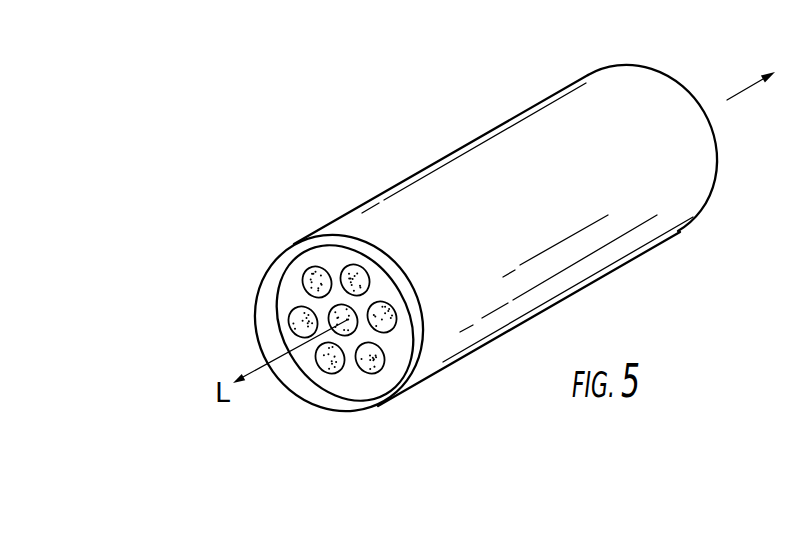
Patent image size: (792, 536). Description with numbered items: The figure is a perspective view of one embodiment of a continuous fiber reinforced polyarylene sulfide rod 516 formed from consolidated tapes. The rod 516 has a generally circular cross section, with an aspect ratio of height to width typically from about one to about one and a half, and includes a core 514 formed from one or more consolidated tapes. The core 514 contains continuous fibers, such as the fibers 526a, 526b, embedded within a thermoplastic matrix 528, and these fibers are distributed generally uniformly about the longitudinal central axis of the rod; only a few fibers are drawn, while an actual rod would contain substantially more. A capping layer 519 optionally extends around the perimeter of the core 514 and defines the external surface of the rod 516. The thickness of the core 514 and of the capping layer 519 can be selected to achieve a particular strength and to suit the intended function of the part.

The rod 516 is at (453, 272).
The capping layer 519 is at (328, 238).
The thermoplastic matrix 528 is at (392, 295).
The core 514 is at (315, 360).
The continuous fiber 526a is at (346, 323).
The continuous fiber 526b is at (305, 278).